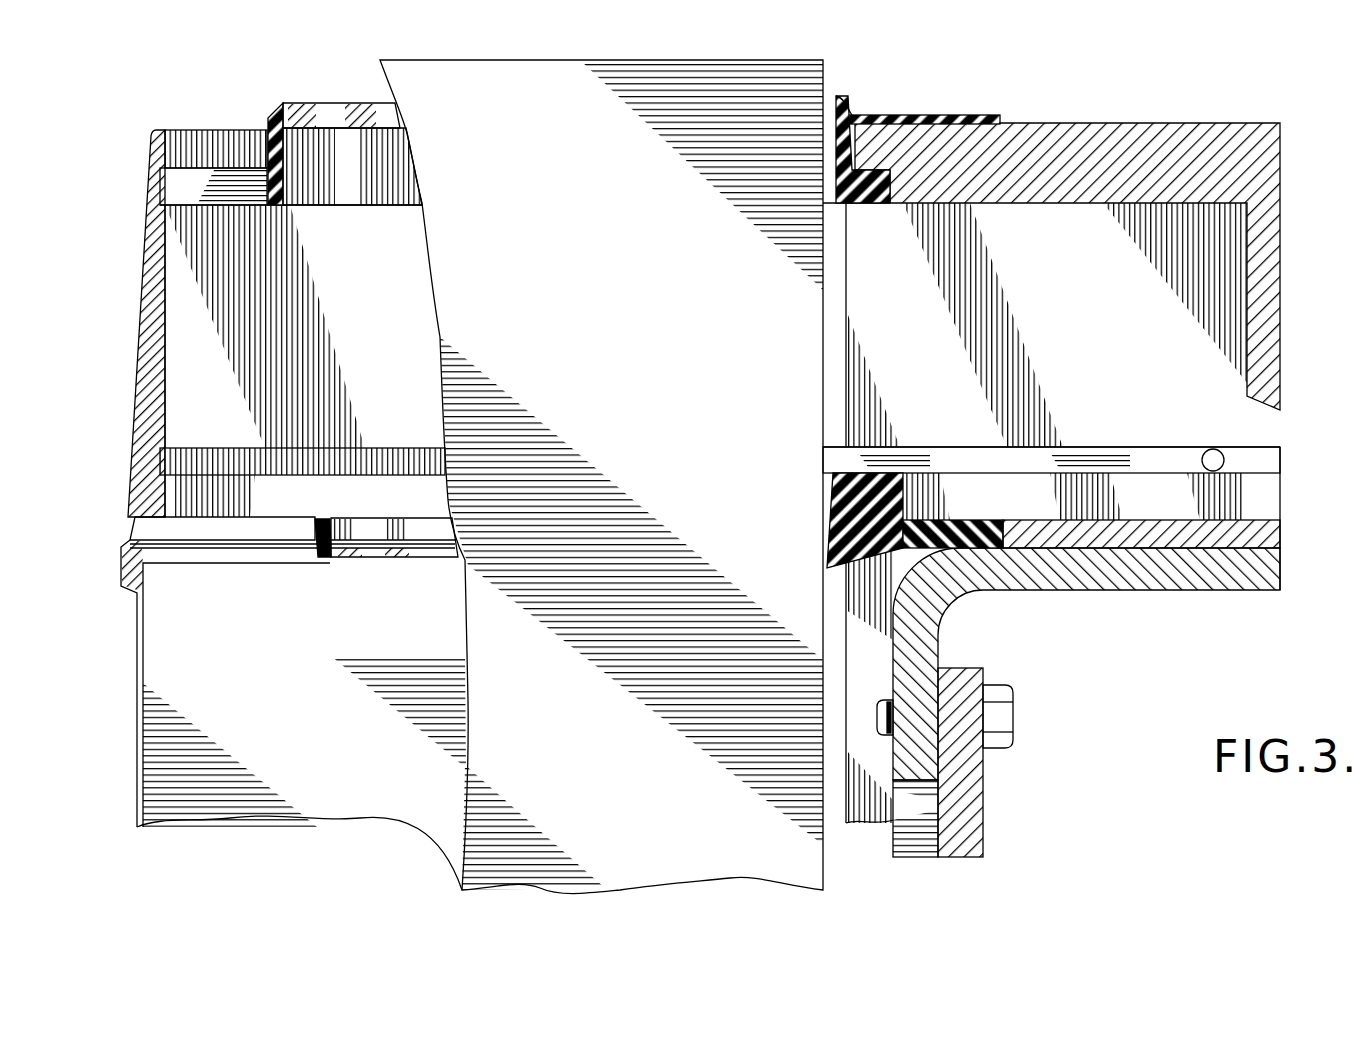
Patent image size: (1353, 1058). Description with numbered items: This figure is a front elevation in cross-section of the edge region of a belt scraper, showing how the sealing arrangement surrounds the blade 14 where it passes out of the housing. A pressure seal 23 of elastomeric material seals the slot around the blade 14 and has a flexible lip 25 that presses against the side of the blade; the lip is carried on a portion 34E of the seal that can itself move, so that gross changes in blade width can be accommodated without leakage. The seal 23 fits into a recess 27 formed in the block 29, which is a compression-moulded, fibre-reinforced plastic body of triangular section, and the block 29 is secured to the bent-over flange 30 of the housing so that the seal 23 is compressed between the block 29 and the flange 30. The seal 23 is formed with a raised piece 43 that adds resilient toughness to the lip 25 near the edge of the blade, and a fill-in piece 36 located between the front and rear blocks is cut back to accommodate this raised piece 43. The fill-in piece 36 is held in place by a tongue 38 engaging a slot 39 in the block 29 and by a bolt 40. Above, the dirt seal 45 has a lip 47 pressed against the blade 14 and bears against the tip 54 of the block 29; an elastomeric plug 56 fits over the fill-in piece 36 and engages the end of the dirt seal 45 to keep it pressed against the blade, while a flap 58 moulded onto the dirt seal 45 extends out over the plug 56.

The blade 14 is at (693, 369).
The pressure seal 23 is at (437, 562).
The flexible lip 25 is at (375, 560).
The recess 27 is at (230, 532).
The block 29 is at (392, 319).
The bent-over flange 30 is at (225, 568).
The portion of the seal 34E is at (935, 528).
The fill-in piece 36 is at (1062, 304).
The tongue 38 is at (1052, 458).
The slot 39 is at (423, 462).
The bolt 40 is at (1203, 453).
The raised piece 43 is at (888, 478).
The dirt seal 45 is at (365, 190).
The lip 47 is at (300, 103).
The tip 54 is at (223, 128).
The plug 56 is at (1148, 130).
The flap 58 is at (955, 115).